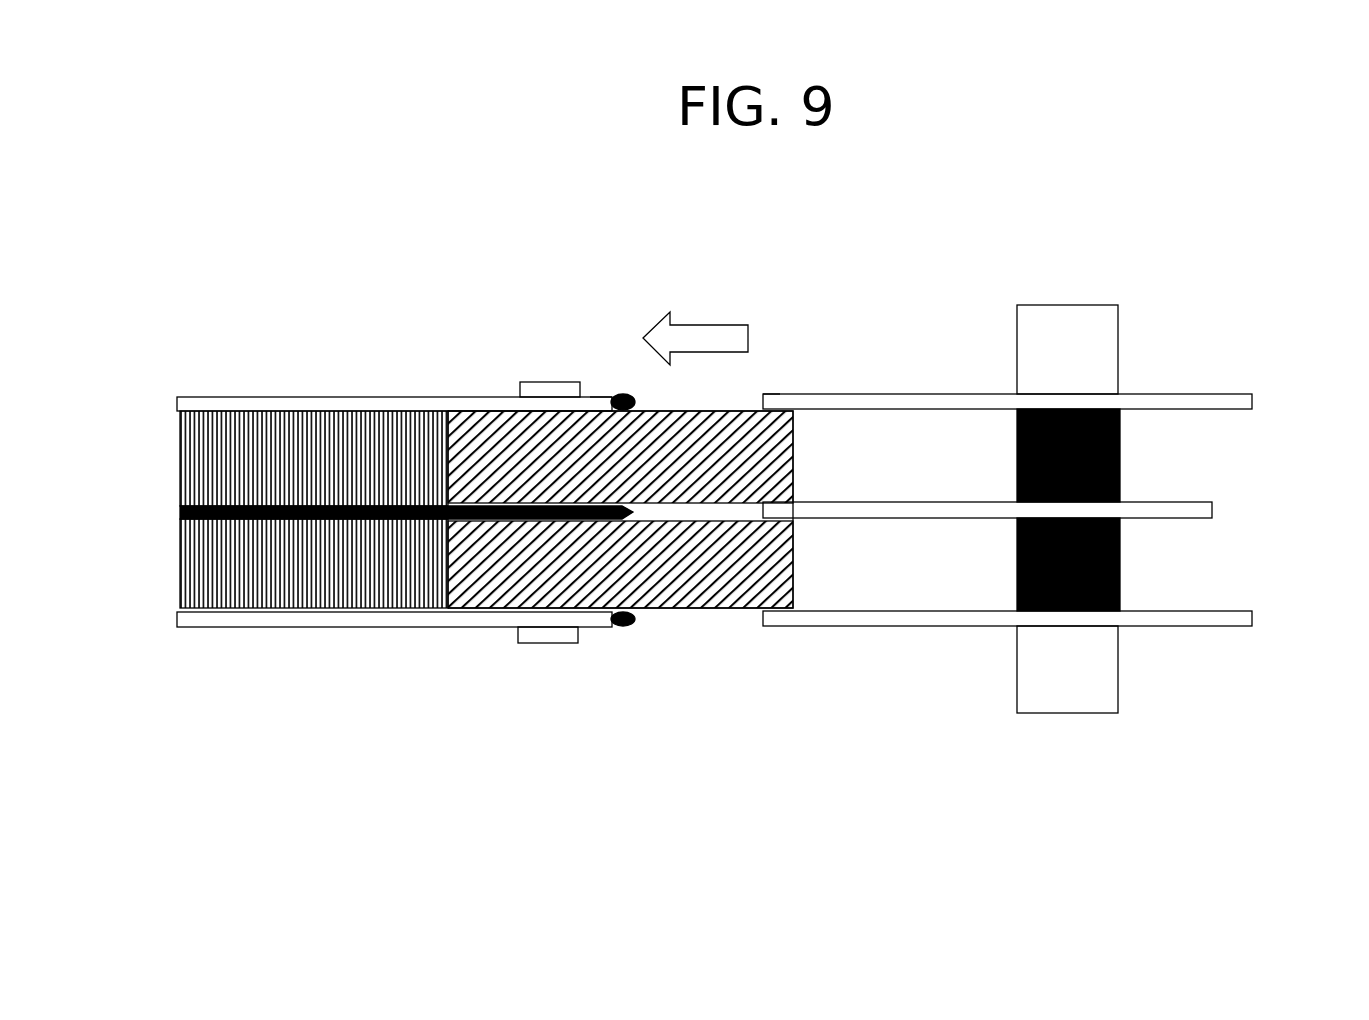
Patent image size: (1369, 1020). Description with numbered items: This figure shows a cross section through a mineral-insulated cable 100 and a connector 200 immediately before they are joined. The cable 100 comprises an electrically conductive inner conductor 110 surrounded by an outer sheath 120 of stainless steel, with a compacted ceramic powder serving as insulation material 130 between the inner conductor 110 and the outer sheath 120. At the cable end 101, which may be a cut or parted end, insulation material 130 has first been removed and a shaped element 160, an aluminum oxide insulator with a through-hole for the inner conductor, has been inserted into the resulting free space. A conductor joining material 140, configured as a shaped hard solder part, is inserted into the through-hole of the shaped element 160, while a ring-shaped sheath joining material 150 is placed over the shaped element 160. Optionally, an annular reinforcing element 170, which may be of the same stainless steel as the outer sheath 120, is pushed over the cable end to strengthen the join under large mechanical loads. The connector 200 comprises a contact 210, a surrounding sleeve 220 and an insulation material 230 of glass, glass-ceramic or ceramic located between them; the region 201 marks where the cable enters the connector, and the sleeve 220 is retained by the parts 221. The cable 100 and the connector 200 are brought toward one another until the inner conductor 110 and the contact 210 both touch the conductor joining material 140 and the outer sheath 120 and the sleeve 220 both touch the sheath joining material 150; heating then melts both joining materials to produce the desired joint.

The mineral-insulated cable 100 is at (171, 267).
The cable end 101 is at (600, 386).
The inner conductor 110 is at (178, 512).
The outer sheath 120 is at (176, 400).
The insulation material 130 is at (173, 457).
The conductor joining material 140 is at (636, 513).
The sheath joining material 150 is at (625, 393).
The shaped element 160 is at (703, 412).
The reinforcing element 170 is at (527, 382).
The connector 200 is at (1285, 237).
The insertion opening 201 is at (770, 386).
The contact 210 is at (922, 520).
The sleeve 220 is at (1192, 398).
The clamp block 221 is at (1020, 713).
The insulation material 230 is at (1015, 418).